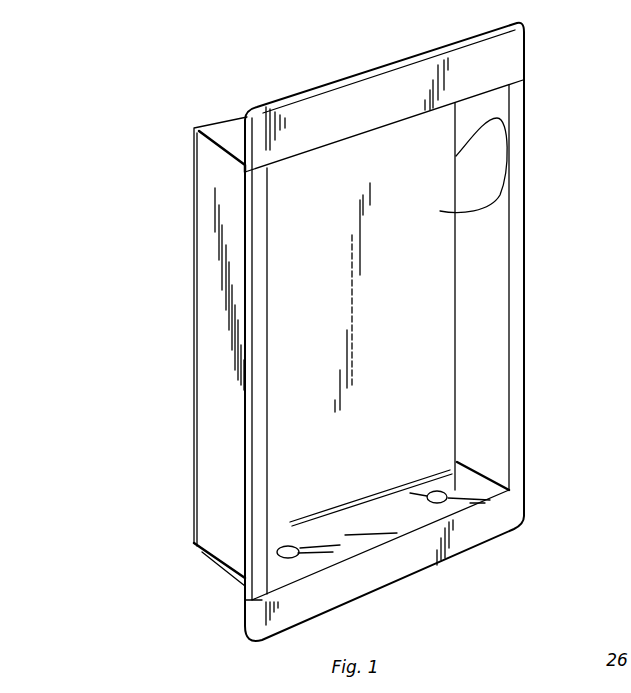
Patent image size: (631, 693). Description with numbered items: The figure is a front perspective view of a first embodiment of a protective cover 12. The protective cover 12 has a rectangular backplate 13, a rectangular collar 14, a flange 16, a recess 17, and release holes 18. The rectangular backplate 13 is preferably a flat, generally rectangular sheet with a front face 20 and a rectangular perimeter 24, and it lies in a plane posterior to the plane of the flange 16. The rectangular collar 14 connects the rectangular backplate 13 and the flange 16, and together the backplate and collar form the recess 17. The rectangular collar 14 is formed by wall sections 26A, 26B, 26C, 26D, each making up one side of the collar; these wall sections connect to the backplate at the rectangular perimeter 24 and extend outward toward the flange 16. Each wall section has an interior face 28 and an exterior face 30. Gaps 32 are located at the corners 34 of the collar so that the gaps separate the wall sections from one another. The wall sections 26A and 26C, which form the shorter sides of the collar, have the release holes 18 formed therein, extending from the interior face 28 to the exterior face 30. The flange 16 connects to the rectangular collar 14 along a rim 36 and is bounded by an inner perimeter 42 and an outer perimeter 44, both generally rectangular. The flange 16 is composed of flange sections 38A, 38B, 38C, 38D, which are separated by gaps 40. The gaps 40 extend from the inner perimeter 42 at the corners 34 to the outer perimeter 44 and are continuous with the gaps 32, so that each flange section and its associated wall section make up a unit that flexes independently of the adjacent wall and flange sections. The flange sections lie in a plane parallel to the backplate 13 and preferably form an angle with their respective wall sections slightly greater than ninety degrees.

The protective cover 12 is at (140, 524).
The rectangular backplate 13 is at (487, 209).
The rectangular collar 14 is at (220, 497).
The flange 16 is at (483, 60).
The recess 17 is at (396, 276).
The release holes 18 is at (362, 489).
The front face 20 is at (492, 403).
The rectangular perimeter 24 is at (462, 257).
The wall section 26A is at (465, 490).
The wall section 26B is at (210, 332).
The wall section 26C is at (232, 142).
The wall section 26D is at (455, 406).
The interior face 28 is at (478, 306).
The exterior face 30 is at (236, 148).
The gaps 32 is at (230, 142).
The corners 34 is at (196, 130).
The rim 36 is at (267, 299).
The flange section 38A is at (467, 533).
The flange section 38B is at (262, 422).
The flange section 38C is at (322, 118).
The flange section 38D is at (517, 98).
The gaps 40 is at (262, 176).
The inner perimeter 42 is at (456, 156).
The outer perimeter 44 is at (370, 68).